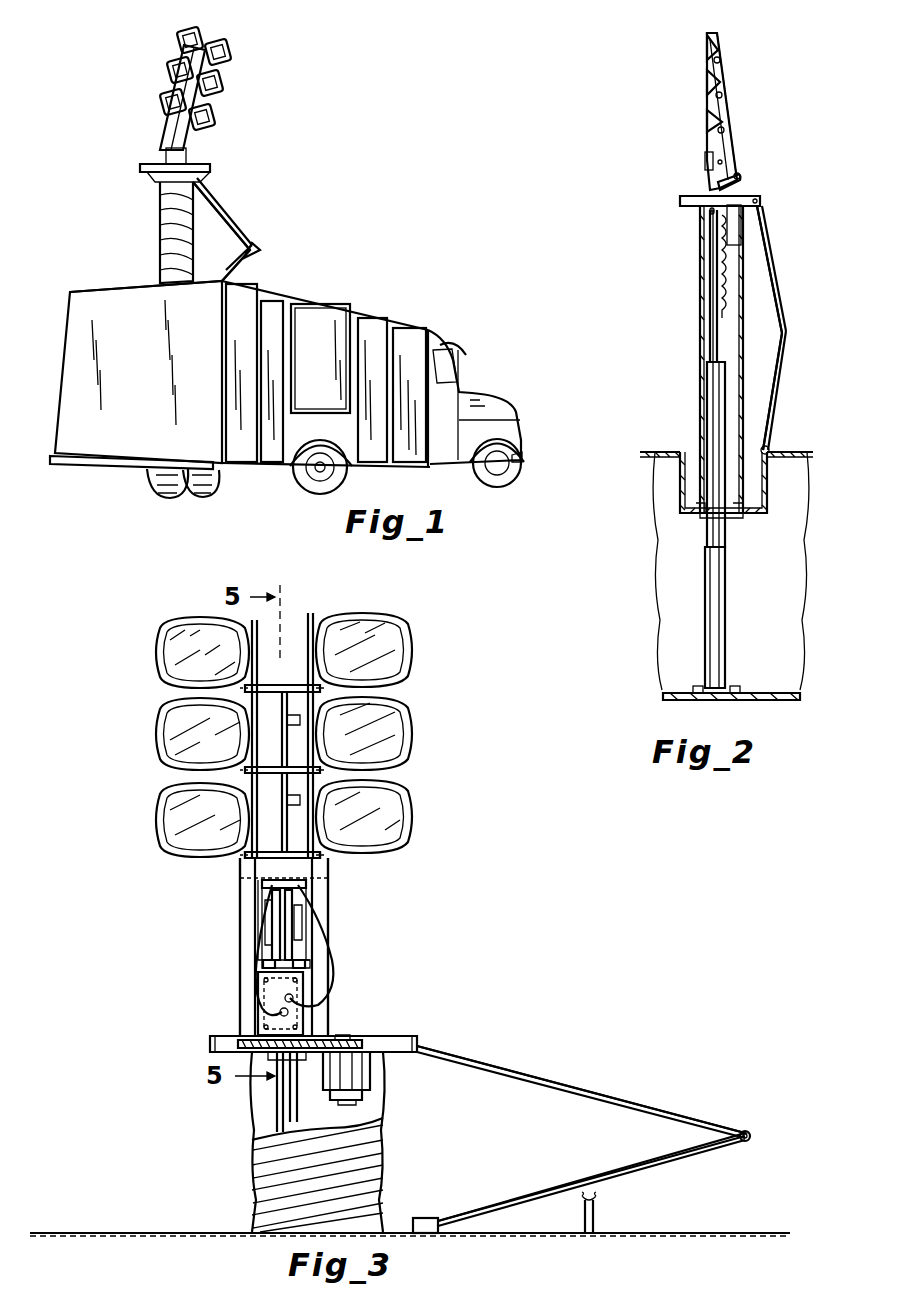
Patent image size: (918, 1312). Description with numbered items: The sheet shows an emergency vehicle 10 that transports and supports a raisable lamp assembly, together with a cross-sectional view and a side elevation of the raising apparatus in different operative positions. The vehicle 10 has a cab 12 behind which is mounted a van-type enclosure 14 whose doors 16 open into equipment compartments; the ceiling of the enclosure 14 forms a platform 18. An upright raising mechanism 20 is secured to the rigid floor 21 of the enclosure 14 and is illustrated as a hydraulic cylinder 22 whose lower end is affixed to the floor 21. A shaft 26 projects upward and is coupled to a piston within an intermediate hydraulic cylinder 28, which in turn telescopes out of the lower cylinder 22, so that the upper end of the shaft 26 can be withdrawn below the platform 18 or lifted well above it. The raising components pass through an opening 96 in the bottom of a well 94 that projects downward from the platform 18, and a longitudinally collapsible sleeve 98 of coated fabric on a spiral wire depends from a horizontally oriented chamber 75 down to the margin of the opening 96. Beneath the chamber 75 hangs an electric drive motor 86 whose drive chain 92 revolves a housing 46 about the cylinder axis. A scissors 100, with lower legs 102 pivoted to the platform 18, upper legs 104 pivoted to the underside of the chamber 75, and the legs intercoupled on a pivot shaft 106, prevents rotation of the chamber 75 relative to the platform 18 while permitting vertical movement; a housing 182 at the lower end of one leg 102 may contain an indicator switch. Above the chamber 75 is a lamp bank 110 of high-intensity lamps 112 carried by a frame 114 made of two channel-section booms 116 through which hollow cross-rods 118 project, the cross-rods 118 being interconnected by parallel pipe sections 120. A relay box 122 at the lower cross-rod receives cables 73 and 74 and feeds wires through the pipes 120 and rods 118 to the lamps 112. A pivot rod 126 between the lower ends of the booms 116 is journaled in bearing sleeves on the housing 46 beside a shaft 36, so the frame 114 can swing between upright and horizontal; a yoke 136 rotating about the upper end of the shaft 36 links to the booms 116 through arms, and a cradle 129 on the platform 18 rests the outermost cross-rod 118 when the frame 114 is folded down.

In FIG. 1, the emergency vehicle 10 is at (512, 385).
In FIG. 1, the cab 12 is at (446, 348).
In FIG. 1, the van-type enclosure 14 is at (70, 342).
In FIG. 1, the doors 16 is at (318, 322).
In FIG. 1, the platform 18 is at (110, 292).
In FIG. 2, the platform 18 is at (812, 445).
In FIG. 3, the platform 18 is at (696, 1232).
In FIG. 2, the raising mechanism 20 is at (680, 543).
In FIG. 3, the raising mechanism 20 is at (240, 1165).
In FIG. 2, the floor 21 is at (773, 690).
In FIG. 2, the hydraulic cylinder 22 is at (722, 625).
In FIG. 2, the shaft 26 is at (710, 312).
In FIG. 3, the shaft 26 is at (277, 1103).
In FIG. 2, the intermediate hydraulic cylinder 28 is at (707, 405).
In FIG. 3, the shaft 36 is at (284, 940).
In FIG. 3, the housing 46 is at (258, 1022).
In FIG. 3, the cable 73 is at (322, 958).
In FIG. 2, the cable 74 is at (742, 178).
In FIG. 3, the cable 74 is at (252, 978).
In FIG. 2, the chamber 75 is at (696, 196).
In FIG. 3, the chamber 75 is at (410, 1036).
In FIG. 3, the electric drive motor 86 is at (352, 1075).
In FIG. 3, the drive chain 92 is at (318, 1038).
In FIG. 2, the well 94 is at (768, 485).
In FIG. 2, the opening 96 is at (730, 516).
In FIG. 1, the collapsible sleeve 98 is at (160, 213).
In FIG. 2, the collapsible sleeve 98 is at (700, 350).
In FIG. 3, the collapsible sleeve 98 is at (370, 1152).
In FIG. 1, the scissors 100 is at (242, 220).
In FIG. 2, the scissors 100 is at (782, 325).
In FIG. 3, the scissors 100 is at (722, 1055).
In FIG. 1, the lower legs 102 is at (246, 262).
In FIG. 2, the lower legs 102 is at (776, 410).
In FIG. 3, the lower legs 102 is at (553, 1165).
In FIG. 1, the upper legs 104 is at (226, 215).
In FIG. 2, the upper legs 104 is at (776, 265).
In FIG. 3, the upper legs 104 is at (585, 1042).
In FIG. 3, the pivot shaft 106 is at (752, 1130).
In FIG. 1, the lamp bank 110 is at (226, 106).
In FIG. 2, the lamp bank 110 is at (700, 60).
In FIG. 1, the lamps 112 is at (230, 55).
In FIG. 3, the lamps 112 is at (155, 636).
In FIG. 1, the frame 114 is at (166, 82).
In FIG. 2, the frame 114 is at (732, 100).
In FIG. 3, the frame 114 is at (238, 884).
In FIG. 2, the booms 116 is at (722, 145).
In FIG. 3, the booms 116 is at (318, 866).
In FIG. 3, the cross-rods 118 is at (289, 685).
In FIG. 3, the pipe sections 120 is at (287, 720).
In FIG. 3, the relay box 122 is at (265, 862).
In FIG. 3, the pivot rod 126 is at (295, 966).
In FIG. 3, the stand or cradle 129 is at (594, 1218).
In FIG. 3, the yoke 136 is at (290, 893).
In FIG. 3, the housing 182 is at (460, 1180).